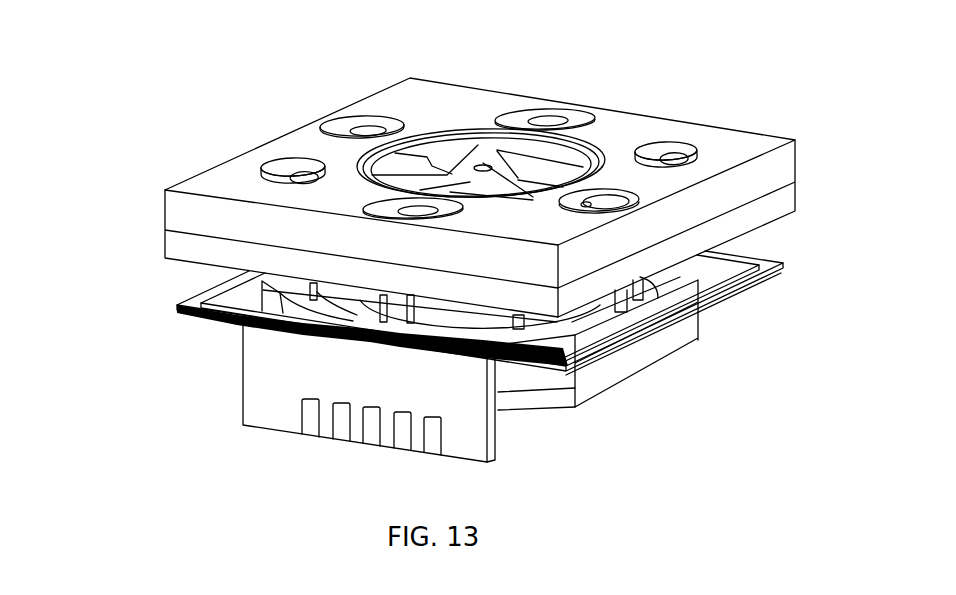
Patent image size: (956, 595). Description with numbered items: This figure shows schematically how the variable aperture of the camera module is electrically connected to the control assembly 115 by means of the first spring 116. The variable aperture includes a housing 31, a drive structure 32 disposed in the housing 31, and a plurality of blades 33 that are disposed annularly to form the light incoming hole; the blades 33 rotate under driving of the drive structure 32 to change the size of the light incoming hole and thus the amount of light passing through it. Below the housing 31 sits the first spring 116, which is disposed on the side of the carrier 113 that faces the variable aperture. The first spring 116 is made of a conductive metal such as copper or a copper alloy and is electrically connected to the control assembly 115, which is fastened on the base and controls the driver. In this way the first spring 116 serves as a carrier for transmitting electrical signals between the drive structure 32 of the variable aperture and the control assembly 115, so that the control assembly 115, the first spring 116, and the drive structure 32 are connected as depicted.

The housing 31 is at (242, 167).
The drive structure 32 is at (550, 123).
The blades 33 is at (393, 150).
The carrier 113 is at (662, 340).
The control assembly 115 is at (258, 397).
The first spring 116 is at (177, 308).